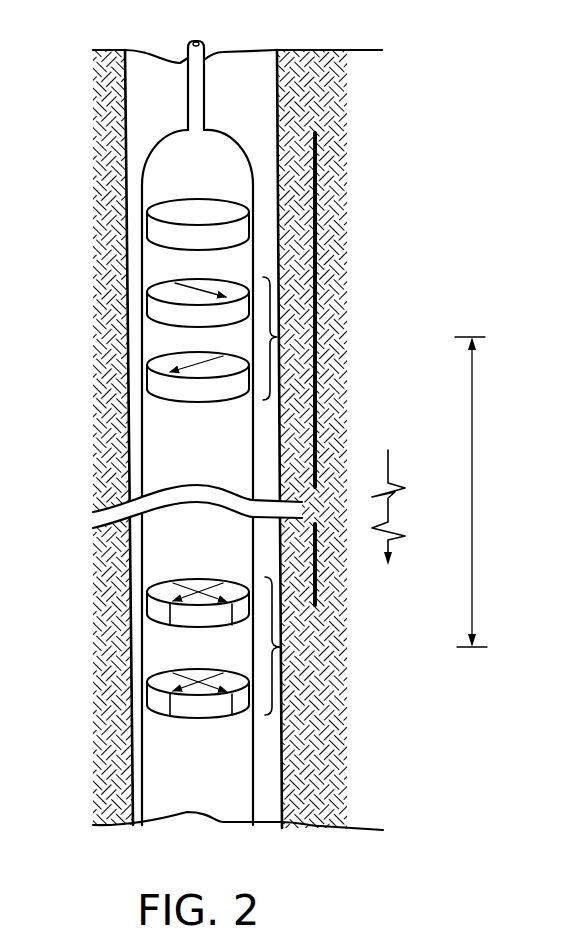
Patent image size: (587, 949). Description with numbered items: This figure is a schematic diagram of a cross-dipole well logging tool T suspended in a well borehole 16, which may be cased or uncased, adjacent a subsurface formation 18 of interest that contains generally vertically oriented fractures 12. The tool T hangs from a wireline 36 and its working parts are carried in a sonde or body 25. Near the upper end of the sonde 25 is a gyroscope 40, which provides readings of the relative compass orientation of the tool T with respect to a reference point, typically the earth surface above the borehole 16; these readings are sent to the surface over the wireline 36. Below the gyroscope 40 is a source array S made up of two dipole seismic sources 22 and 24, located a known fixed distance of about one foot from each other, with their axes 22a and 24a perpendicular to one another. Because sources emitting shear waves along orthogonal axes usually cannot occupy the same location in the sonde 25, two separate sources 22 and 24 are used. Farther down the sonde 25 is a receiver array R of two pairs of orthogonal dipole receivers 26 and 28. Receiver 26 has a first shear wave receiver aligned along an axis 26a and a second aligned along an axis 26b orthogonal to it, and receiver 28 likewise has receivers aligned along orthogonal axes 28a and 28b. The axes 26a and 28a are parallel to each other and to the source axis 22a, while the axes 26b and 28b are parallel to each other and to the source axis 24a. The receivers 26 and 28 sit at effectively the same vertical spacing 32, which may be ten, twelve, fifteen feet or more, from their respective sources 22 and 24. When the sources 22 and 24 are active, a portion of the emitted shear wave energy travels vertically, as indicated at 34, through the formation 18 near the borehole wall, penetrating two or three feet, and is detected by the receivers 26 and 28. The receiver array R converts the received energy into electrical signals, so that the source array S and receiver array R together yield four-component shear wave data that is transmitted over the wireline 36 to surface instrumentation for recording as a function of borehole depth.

The vertically oriented fractures 12 is at (320, 217).
The well borehole 16 is at (217, 785).
The subsurface formation 18 is at (328, 787).
The dipole seismic source 22 is at (140, 306).
The axis of source 22 22a is at (157, 289).
The dipole seismic source 24 is at (140, 383).
The axis of source 24 24a is at (163, 357).
The sonde 25 is at (130, 663).
The dipole receiver 26 is at (142, 598).
The axis of first shear wave receiver of receiver 26 26a is at (173, 585).
The axis of second shear wave receiver of receiver 26 26b is at (183, 622).
The dipole receiver 28 is at (143, 718).
The axis of first shear wave receiver of receiver 28 28a is at (172, 675).
The axis of second shear wave receiver of receiver 28 28b is at (190, 717).
The vertical spacing 32 is at (470, 463).
The shear wave seismic energy path 34 is at (390, 472).
The wireline 36 is at (205, 73).
The gyroscope 40 is at (157, 233).
The source array S is at (277, 335).
The receiver array R is at (280, 647).
The well logging tool T is at (392, 94).